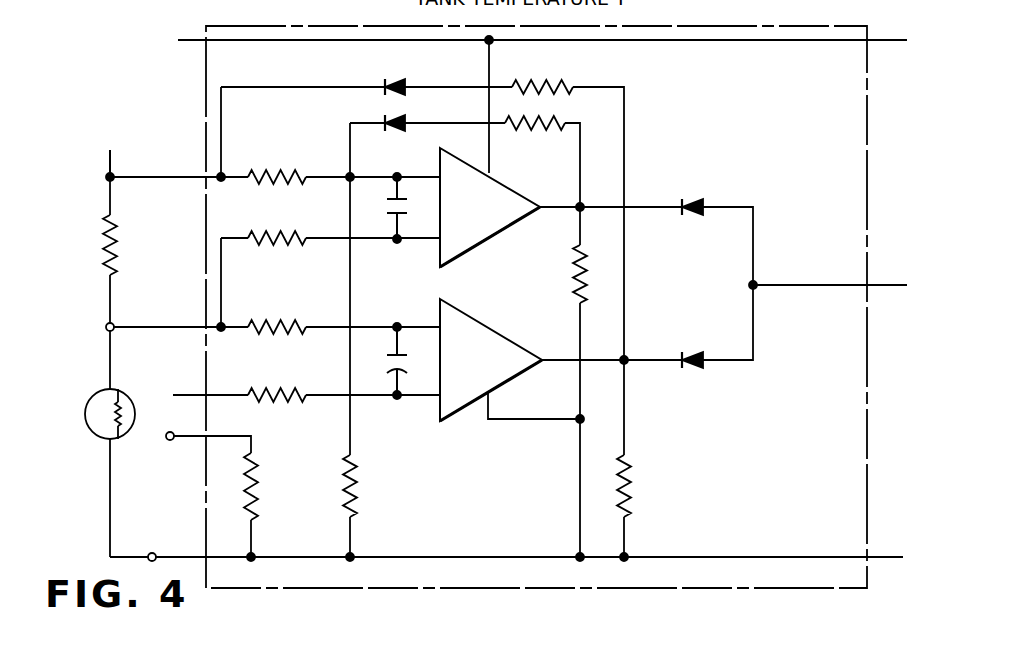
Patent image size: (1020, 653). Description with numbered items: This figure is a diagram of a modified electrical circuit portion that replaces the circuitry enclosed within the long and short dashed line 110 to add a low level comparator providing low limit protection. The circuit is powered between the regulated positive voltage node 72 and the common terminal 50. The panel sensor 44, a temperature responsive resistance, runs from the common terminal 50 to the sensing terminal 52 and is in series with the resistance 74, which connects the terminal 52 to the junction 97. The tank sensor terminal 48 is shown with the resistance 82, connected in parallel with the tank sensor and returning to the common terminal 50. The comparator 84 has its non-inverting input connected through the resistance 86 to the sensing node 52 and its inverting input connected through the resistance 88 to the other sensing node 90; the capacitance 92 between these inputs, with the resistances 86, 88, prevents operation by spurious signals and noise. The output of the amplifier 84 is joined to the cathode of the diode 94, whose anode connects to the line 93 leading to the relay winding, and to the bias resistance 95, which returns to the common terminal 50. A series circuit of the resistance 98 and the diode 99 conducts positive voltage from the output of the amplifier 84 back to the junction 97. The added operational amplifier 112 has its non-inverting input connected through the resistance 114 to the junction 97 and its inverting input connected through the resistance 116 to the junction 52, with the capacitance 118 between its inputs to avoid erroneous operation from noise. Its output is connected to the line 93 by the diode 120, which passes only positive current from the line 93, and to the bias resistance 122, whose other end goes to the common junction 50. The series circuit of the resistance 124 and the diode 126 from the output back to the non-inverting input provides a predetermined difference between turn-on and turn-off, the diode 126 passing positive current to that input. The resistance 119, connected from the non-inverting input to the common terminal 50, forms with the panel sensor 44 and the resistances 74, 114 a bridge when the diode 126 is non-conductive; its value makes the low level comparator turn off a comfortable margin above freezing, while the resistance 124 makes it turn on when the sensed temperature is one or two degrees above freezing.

The long and short dashed line 110 is at (773, 24).
The regulated positive voltage node 72 is at (771, 42).
The junction between resistances 97 is at (175, 176).
The resistance 74 is at (118, 232).
The sensing node 52 is at (170, 326).
The panel sensor 44 is at (93, 432).
The common terminal 50 is at (177, 552).
The terminal 48 is at (188, 439).
The resistance 82 is at (262, 476).
The resistance 114 is at (297, 146).
The resistance 116 is at (297, 208).
The resistance 86 is at (291, 320).
The sensing node 90 is at (183, 394).
The resistance 88 is at (292, 392).
The capacitance 118 is at (385, 205).
The capacitance 92 is at (405, 364).
The resistance 119 is at (358, 470).
The operational amplifier 112 is at (512, 205).
The operational amplifier 84 is at (508, 350).
The diode 99 is at (406, 84).
The resistance 98 is at (546, 83).
The diode 126 is at (406, 120).
The resistance 124 is at (559, 120).
The bias resistance 122 is at (574, 278).
The bias resistance 95 is at (632, 472).
The diode 120 is at (703, 200).
The diode 94 is at (690, 368).
The line 93 is at (797, 283).